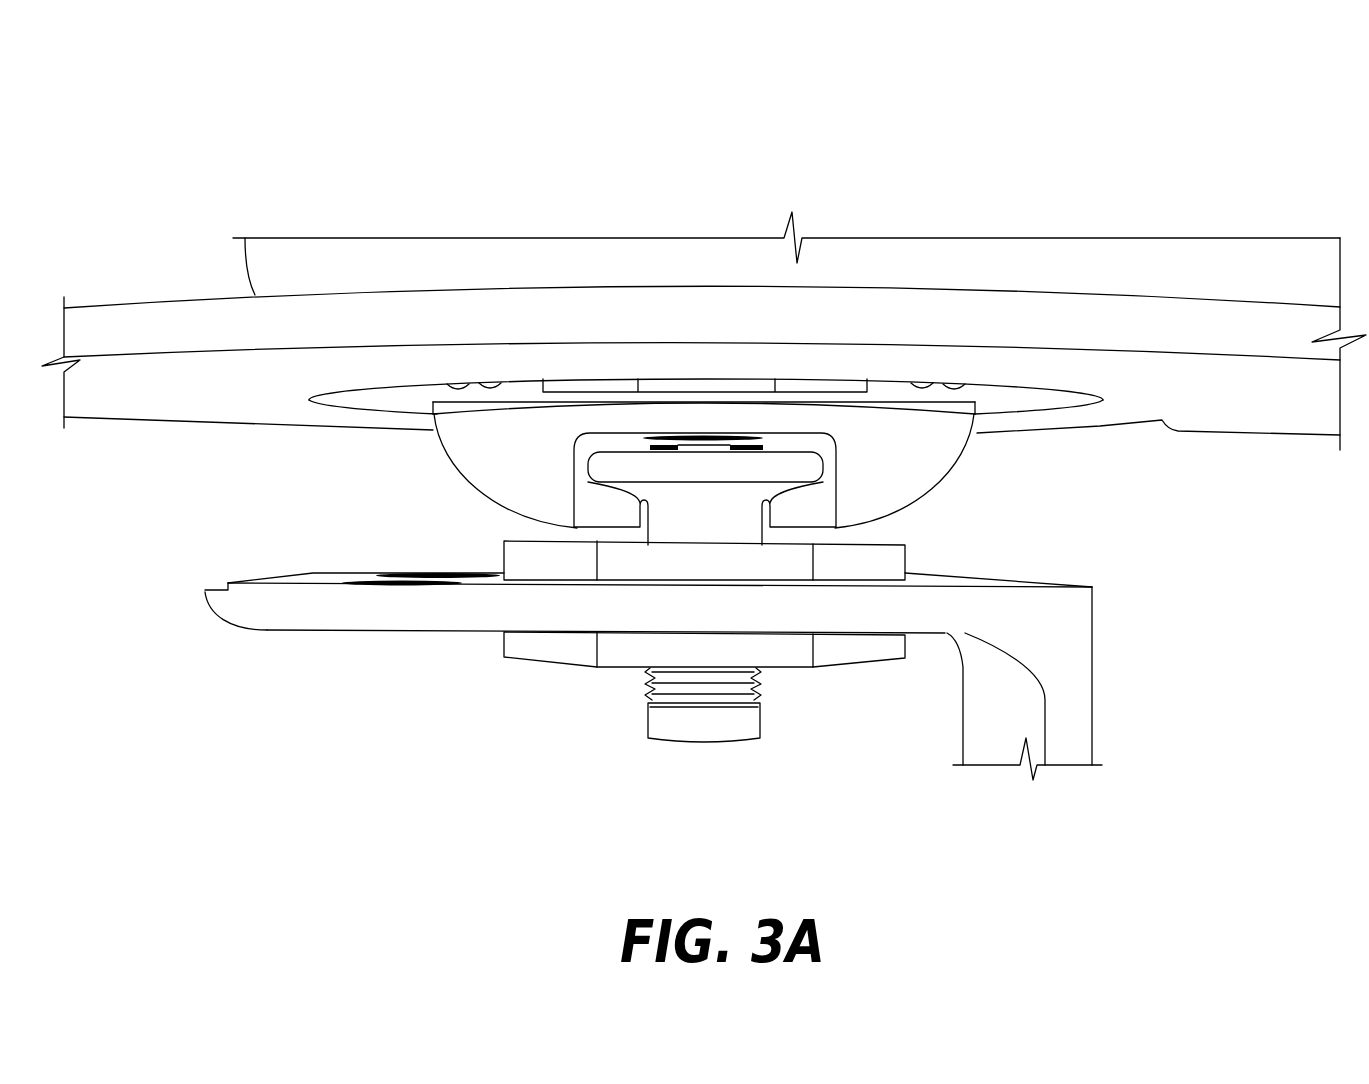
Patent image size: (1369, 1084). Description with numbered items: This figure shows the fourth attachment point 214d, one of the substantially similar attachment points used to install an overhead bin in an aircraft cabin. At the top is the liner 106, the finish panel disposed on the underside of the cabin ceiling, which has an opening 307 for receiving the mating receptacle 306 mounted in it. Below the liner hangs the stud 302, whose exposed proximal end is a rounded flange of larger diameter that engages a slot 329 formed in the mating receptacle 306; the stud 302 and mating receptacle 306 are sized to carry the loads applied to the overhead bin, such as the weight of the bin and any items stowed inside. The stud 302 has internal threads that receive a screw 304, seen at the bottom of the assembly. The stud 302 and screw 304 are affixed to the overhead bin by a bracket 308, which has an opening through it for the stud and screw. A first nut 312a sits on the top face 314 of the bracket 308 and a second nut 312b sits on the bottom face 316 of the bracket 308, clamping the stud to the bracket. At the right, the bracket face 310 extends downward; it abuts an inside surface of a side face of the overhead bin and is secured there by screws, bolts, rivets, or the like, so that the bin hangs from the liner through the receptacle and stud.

The fourth attachment point 214d is at (397, 150).
The liner 106 is at (98, 352).
The opening 307 is at (1063, 427).
The mating receptacle 306 is at (458, 448).
The stud 302 is at (693, 489).
The slot 329 is at (847, 450).
The first nut 312a is at (523, 558).
The second nut 312b is at (553, 657).
The bracket 308 is at (275, 602).
The top face 314 is at (953, 610).
The bracket face 310 is at (1093, 677).
The bottom face 316 is at (928, 628).
The screw 304 is at (683, 730).